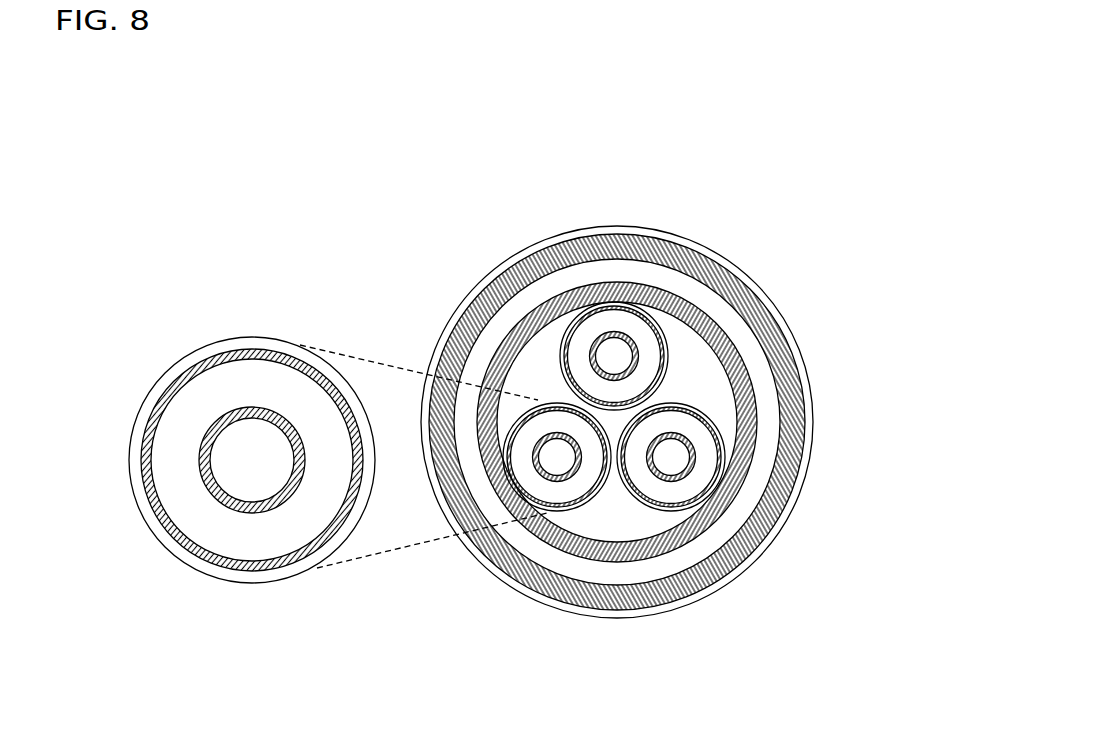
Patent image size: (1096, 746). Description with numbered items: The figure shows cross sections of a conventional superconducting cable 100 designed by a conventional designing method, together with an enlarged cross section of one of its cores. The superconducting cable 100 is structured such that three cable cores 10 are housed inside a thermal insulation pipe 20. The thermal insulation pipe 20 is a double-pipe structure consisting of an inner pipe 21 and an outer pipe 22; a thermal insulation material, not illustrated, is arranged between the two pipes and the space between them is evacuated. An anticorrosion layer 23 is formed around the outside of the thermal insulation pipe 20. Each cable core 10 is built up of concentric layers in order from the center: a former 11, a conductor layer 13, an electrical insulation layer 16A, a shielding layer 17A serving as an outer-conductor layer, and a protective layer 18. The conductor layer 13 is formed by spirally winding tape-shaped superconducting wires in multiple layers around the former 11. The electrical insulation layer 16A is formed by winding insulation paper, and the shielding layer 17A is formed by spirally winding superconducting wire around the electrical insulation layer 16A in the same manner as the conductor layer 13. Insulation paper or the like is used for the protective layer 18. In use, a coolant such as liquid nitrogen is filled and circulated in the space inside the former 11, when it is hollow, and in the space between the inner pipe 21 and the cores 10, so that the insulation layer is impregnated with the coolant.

The superconducting cable 100 is at (541, 222).
The cable core 10 is at (560, 332).
The former 11 is at (222, 453).
The conductor layer 13 is at (205, 477).
The electrical insulation layer 16A is at (197, 517).
The shielding layer 17A is at (220, 572).
The protective layer 18 is at (287, 572).
The thermal insulation pipe 20 is at (871, 190).
The inner pipe 21 is at (675, 292).
The outer pipe 22 is at (752, 295).
The anticorrosion layer 23 is at (802, 488).